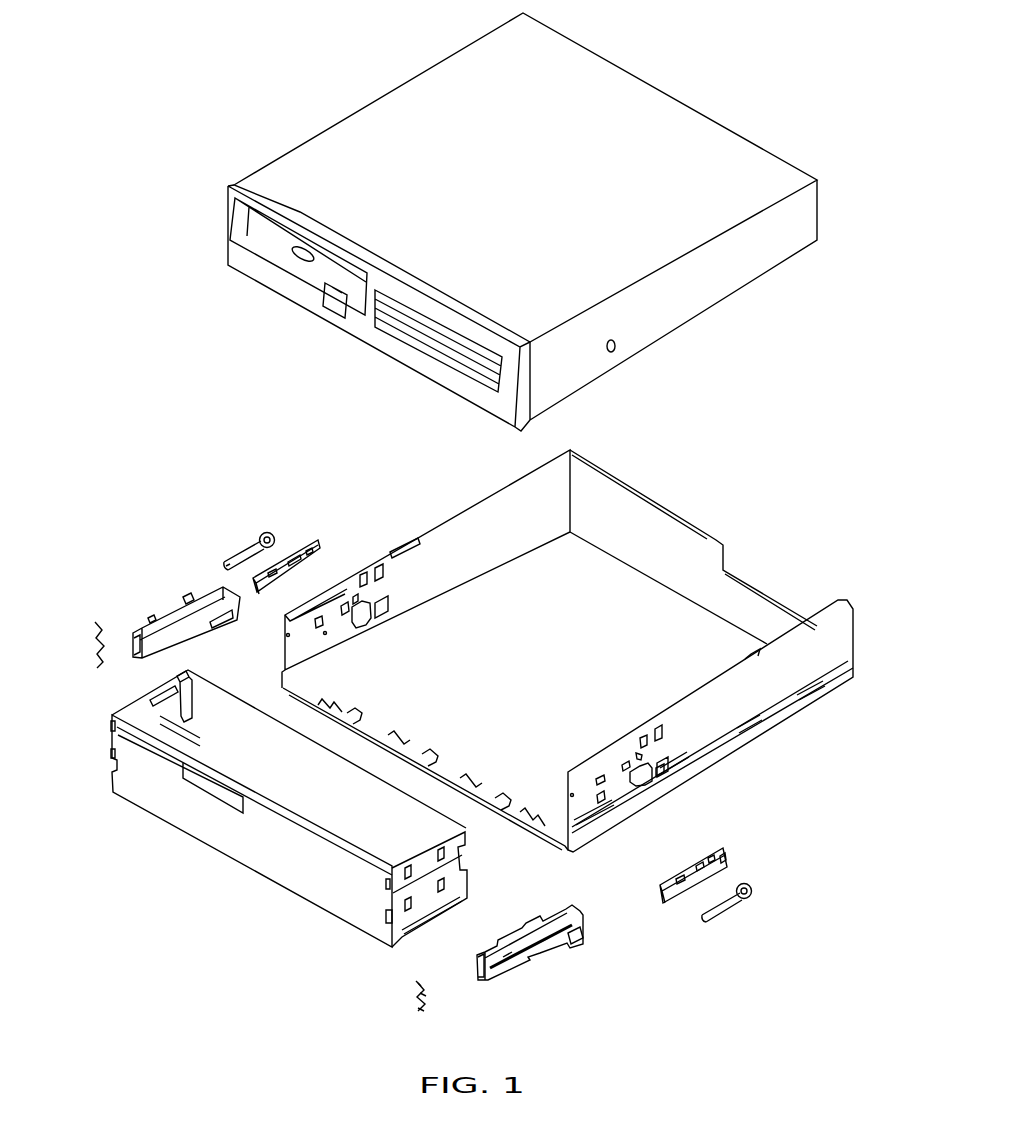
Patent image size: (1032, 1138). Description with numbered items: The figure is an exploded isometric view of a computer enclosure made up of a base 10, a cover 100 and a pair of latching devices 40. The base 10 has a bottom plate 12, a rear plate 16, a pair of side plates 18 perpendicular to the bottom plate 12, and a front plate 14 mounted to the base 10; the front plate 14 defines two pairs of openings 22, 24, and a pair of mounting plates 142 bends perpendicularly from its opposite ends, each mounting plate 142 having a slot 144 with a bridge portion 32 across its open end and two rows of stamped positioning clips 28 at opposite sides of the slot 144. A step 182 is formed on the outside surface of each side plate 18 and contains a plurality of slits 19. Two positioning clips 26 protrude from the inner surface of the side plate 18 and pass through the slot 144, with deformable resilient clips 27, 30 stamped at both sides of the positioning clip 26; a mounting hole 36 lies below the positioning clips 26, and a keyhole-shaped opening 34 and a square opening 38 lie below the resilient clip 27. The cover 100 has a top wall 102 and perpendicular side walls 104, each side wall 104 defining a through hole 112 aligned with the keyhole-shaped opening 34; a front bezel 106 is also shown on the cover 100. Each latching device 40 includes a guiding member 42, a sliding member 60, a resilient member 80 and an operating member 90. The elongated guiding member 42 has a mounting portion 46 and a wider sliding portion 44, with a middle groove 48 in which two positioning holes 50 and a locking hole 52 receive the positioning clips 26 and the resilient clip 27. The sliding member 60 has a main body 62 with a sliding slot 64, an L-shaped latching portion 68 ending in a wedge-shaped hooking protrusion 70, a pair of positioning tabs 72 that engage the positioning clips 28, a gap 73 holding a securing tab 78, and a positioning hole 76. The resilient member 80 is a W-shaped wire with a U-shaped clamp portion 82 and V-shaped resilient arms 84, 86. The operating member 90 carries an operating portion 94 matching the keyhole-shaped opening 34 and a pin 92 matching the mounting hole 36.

The cover 100 is at (706, 87).
The top wall 102 is at (602, 66).
The side wall 104 is at (738, 270).
The front bezel 106 is at (414, 360).
The through hole 112 is at (616, 349).
The base 10 is at (729, 532).
The bottom plate 12 is at (704, 640).
The front plate 14 is at (257, 823).
The rear plate 16 is at (655, 528).
The side plate 18 is at (501, 658).
The step 182 is at (787, 713).
The slit 19 is at (752, 728).
The opening 22 is at (111, 725).
The opening 24 is at (111, 752).
The positioning clip 26 is at (343, 603).
The resilient clip 27 is at (357, 594).
The positioning clip 28 is at (165, 695).
The resilient clip 30 is at (394, 895).
The bridge portion 32 is at (186, 685).
The keyhole-shaped opening 34 is at (647, 781).
The mounting hole 36 is at (607, 796).
The square opening 38 is at (663, 774).
The latching device 40 is at (270, 477).
The guiding member 42 is at (517, 705).
The sliding portion 44 is at (710, 856).
The mounting portion 46 is at (724, 857).
The groove 48 is at (298, 561).
The positioning hole 50 is at (680, 876).
The locking hole 52 is at (698, 863).
The sliding member 60 is at (372, 800).
The main body 62 is at (543, 947).
The sliding slot 64 is at (507, 954).
The L-shaped latching portion 68 is at (221, 625).
The hooking protrusion 70 is at (583, 936).
The positioning tab 72 is at (185, 598).
The gap 73 is at (139, 638).
The positioning hole 76 is at (487, 971).
The securing tab 78 is at (150, 619).
The resilient member 80 is at (273, 812).
The U-shaped clamp portion 82 is at (427, 994).
The V-shaped resilient arm 84 is at (415, 984).
The V-shaped resilient arm 86 is at (422, 1011).
The operating member 90 is at (253, 547).
The pin 92 is at (225, 565).
The operating portion 94 is at (269, 533).
The mounting plate 142 is at (183, 732).
The slot 144 is at (170, 708).